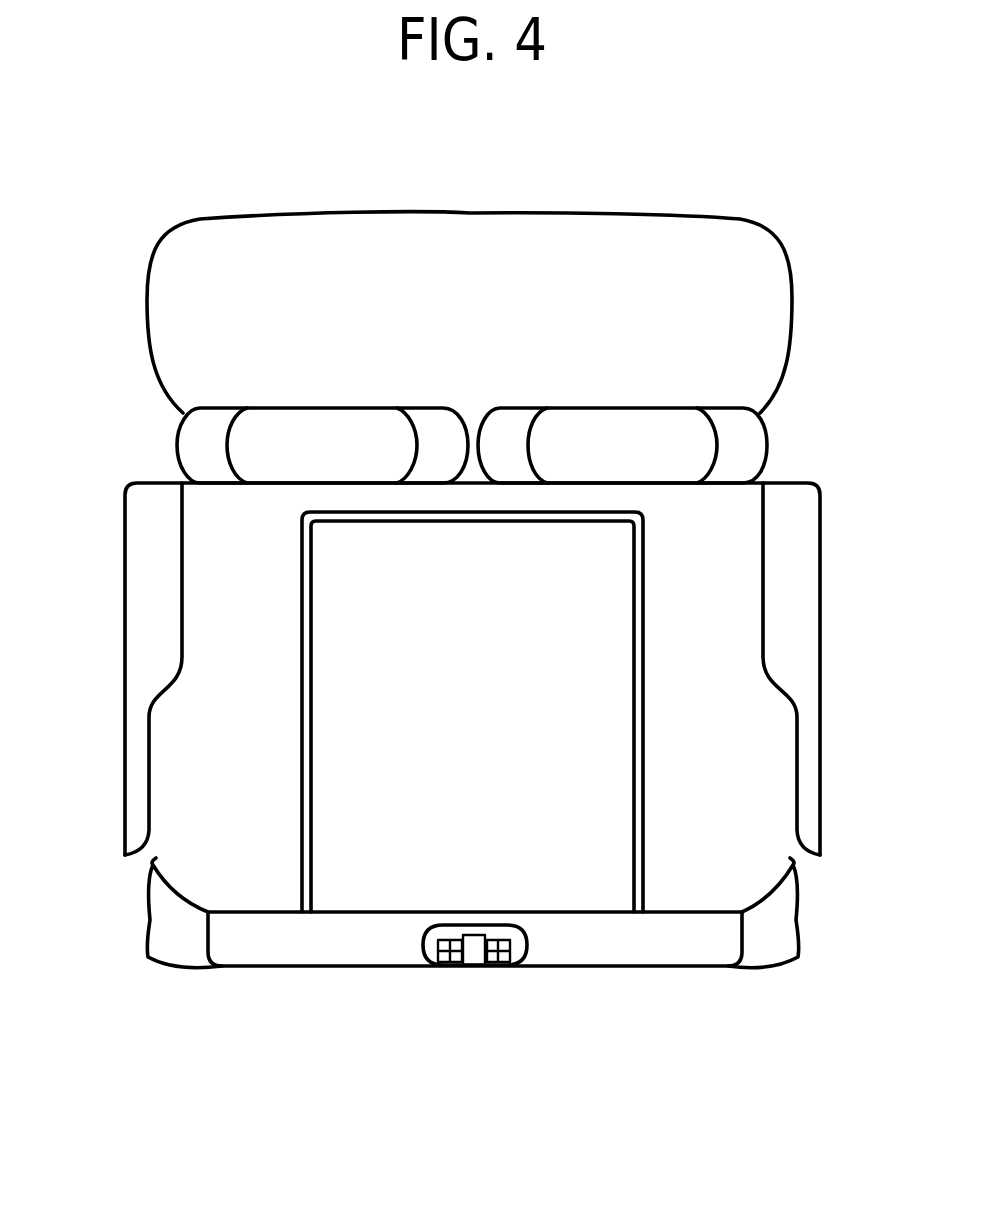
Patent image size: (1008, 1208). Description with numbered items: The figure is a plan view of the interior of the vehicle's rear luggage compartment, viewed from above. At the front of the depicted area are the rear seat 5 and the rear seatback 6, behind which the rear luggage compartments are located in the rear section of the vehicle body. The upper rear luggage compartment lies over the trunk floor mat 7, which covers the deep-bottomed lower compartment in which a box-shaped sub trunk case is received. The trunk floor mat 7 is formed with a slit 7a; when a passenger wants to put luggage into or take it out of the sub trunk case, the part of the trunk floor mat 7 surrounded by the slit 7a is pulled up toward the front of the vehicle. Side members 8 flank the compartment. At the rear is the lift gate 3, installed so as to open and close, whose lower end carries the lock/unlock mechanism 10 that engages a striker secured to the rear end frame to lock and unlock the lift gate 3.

The lift gate 3 is at (357, 950).
The rear seat 5 is at (757, 250).
The rear seatback 6 is at (193, 463).
The trunk floor mat 7 is at (760, 807).
The slit 7a is at (636, 662).
The side bolsters 8 is at (143, 570).
The lock/unlock mechanism 10 is at (478, 963).